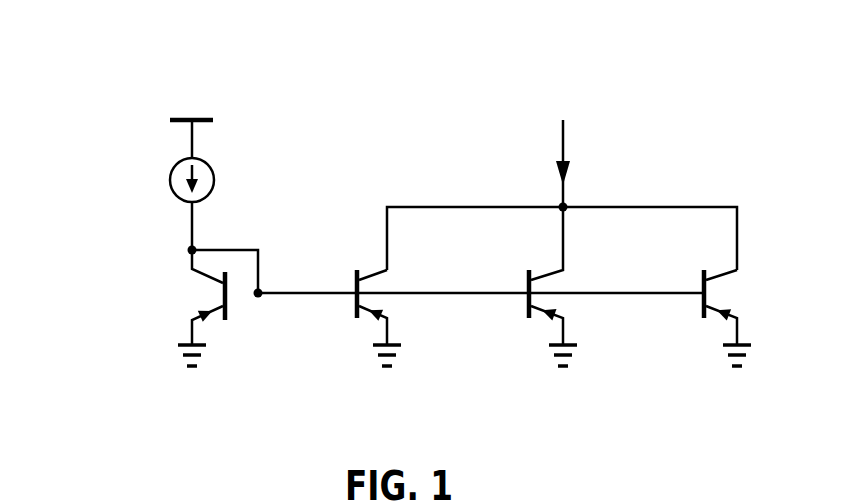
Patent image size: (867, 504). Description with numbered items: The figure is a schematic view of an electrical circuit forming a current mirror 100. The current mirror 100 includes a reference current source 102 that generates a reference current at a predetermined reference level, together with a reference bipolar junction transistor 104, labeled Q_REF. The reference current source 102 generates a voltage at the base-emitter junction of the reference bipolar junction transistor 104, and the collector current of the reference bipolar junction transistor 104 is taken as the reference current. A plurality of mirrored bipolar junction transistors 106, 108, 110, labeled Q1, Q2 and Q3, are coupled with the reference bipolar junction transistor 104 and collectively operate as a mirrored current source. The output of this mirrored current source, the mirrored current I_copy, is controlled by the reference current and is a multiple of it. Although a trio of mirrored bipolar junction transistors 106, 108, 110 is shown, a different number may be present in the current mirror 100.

The current mirror 100 is at (623, 90).
The reference current source 102 is at (155, 100).
The reference bipolar junction transistor 104 is at (162, 333).
The mirrored bipolar junction transistor 106 is at (342, 333).
The mirrored bipolar junction transistor 108 is at (515, 333).
The mirrored bipolar junction transistor 110 is at (683, 333).